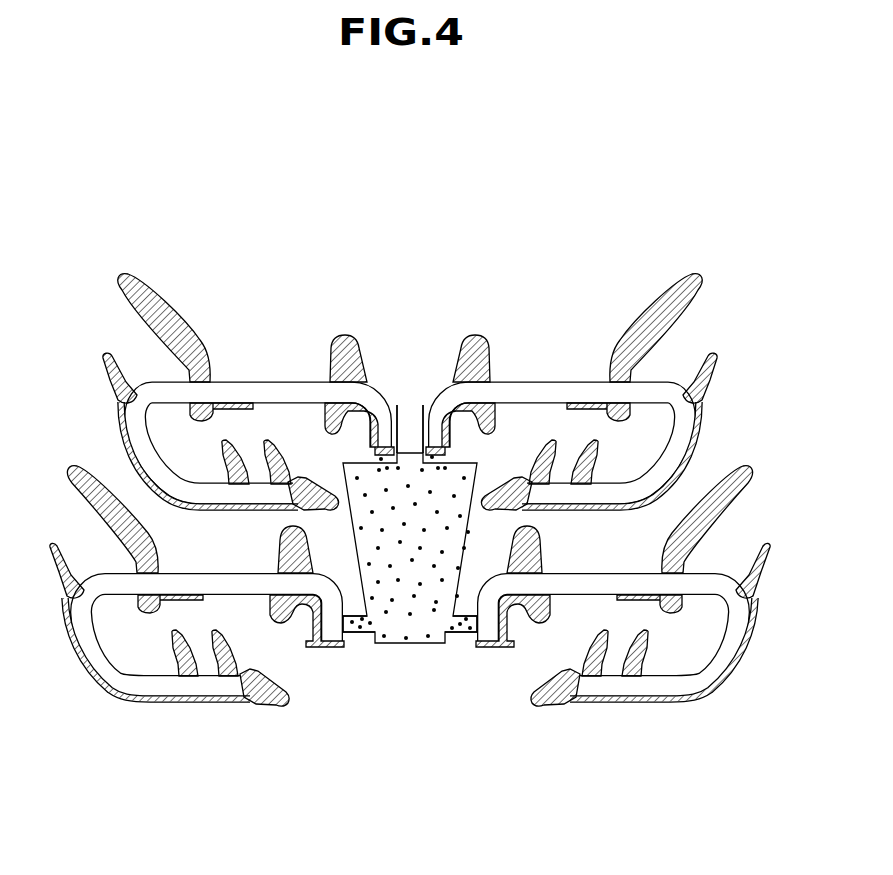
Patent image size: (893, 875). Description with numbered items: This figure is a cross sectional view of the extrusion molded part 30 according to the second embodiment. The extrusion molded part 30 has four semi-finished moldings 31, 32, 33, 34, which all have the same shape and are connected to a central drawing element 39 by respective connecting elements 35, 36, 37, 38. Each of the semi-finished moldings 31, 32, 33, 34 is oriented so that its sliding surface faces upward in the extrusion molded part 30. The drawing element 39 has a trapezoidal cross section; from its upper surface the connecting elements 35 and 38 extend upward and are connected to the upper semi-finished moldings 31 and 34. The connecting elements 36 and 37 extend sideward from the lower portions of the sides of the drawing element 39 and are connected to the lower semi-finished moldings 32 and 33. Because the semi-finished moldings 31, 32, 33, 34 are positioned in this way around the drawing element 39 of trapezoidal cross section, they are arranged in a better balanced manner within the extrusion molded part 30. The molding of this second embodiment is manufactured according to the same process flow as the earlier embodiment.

The extrusion molded part 30 is at (420, 272).
The semi-finished molding 31 is at (283, 392).
The semi-finished molding 32 is at (112, 670).
The semi-finished molding 33 is at (708, 670).
The semi-finished molding 34 is at (538, 392).
The connecting element 35 is at (397, 410).
The connecting element 36 is at (357, 632).
The connecting element 37 is at (463, 632).
The connecting element 38 is at (423, 410).
The drawing element 39 is at (411, 633).